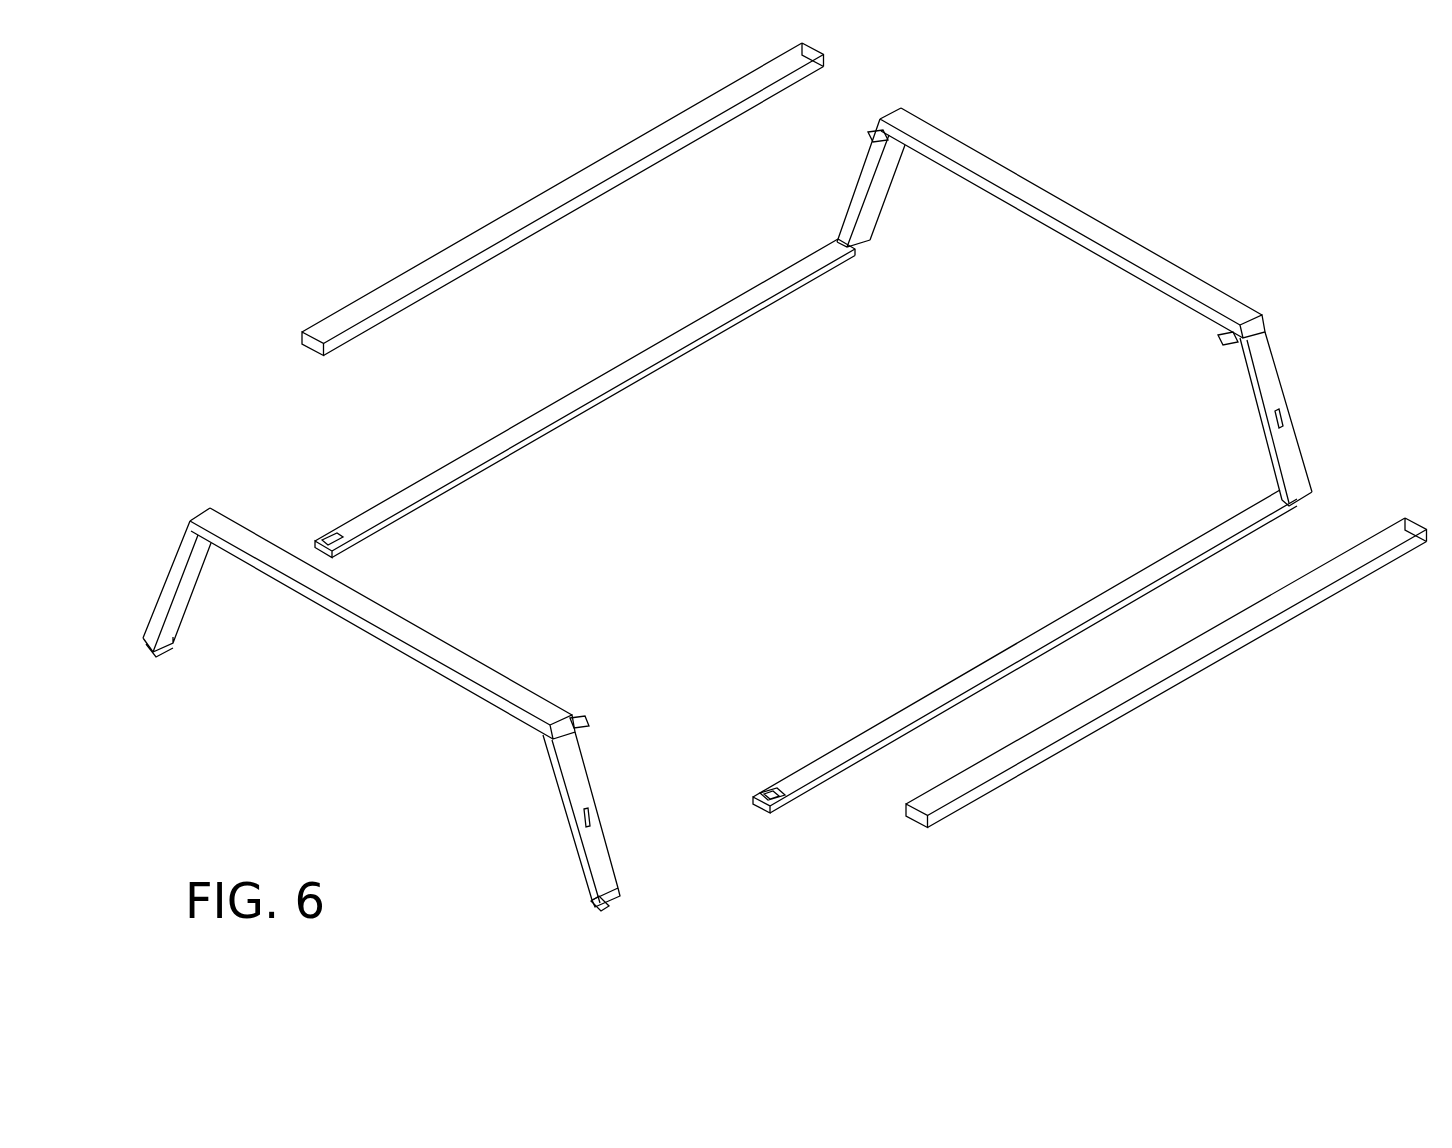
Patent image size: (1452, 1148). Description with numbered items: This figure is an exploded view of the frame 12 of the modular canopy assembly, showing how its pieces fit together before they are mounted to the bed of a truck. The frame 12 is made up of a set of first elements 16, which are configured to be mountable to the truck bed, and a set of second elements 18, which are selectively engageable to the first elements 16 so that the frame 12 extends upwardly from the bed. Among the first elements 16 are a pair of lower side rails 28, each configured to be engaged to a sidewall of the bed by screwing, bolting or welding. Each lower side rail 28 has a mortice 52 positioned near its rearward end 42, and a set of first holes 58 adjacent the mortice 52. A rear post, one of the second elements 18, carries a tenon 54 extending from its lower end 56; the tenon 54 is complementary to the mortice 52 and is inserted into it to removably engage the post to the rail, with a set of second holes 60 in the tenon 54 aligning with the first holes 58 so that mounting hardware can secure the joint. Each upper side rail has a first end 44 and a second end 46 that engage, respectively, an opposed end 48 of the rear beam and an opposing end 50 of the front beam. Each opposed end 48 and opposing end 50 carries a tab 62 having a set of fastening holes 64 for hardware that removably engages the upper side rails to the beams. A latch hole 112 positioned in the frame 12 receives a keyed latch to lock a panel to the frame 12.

The frame 12 is at (1227, 173).
The first elements 16 is at (1066, 318).
The second elements 18 is at (985, 762).
The lower side rails 28 is at (806, 576).
The rearward end 42 is at (757, 812).
The first end 44 is at (1166, 663).
The second end 46 is at (930, 828).
The opposed end 48 is at (415, 740).
The opposing end 50 is at (1066, 307).
The mortice 52 is at (765, 788).
The tenon 54 is at (588, 914).
The lower end 56 is at (607, 888).
The first holes 58 is at (798, 815).
The second holes 60 is at (607, 917).
The tab 62 is at (1228, 345).
The fastening holes 64 is at (858, 136).
The latch hole 112 is at (1285, 413).